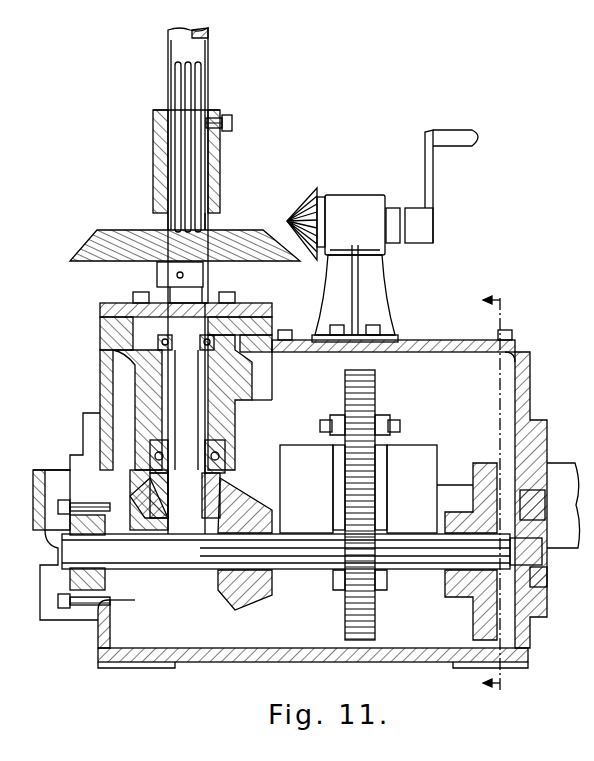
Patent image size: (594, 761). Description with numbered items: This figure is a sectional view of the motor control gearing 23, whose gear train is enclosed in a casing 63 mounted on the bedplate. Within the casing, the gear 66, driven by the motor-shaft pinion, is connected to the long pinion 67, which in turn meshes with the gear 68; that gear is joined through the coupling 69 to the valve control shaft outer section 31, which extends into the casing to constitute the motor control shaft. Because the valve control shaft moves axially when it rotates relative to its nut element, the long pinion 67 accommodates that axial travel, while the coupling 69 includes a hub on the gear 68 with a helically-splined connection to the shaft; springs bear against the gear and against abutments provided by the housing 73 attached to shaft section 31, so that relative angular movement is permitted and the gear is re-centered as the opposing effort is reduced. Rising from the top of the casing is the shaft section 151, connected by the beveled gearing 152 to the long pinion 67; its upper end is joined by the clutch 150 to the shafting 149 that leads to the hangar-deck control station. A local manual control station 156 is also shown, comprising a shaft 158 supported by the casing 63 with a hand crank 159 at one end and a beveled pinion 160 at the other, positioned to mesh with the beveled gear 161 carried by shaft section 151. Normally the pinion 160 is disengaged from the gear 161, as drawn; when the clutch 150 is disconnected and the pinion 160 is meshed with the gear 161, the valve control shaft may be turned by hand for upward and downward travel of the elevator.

The motor control gearing 23 is at (168, 612).
The valve control shaft outer section 31 is at (45, 470).
The casing 63 is at (520, 388).
The gear 66 is at (470, 632).
The long pinion 67 is at (305, 560).
The gear 68 is at (376, 624).
The coupling 69 is at (412, 456).
The housing 73 is at (290, 460).
The shafting 149 is at (198, 47).
The clutch 150 is at (218, 108).
The shaft section 151 is at (168, 222).
The beveled gearing 152 is at (248, 492).
The manual control station 156 is at (372, 165).
The shaft 158 is at (385, 220).
The hand crank 159 is at (452, 140).
The beveled pinion 160 is at (310, 192).
The beveled gear 161 is at (265, 262).